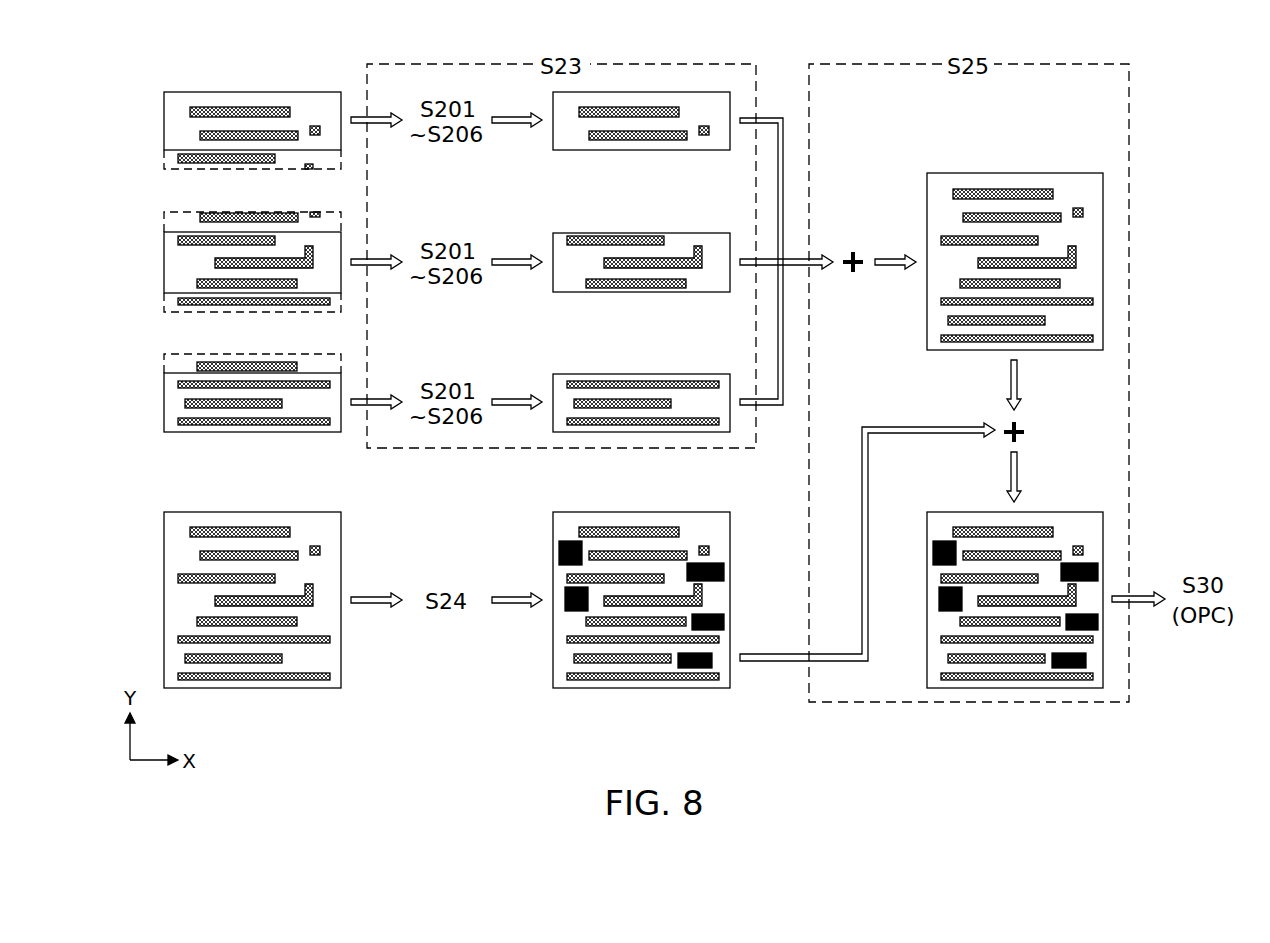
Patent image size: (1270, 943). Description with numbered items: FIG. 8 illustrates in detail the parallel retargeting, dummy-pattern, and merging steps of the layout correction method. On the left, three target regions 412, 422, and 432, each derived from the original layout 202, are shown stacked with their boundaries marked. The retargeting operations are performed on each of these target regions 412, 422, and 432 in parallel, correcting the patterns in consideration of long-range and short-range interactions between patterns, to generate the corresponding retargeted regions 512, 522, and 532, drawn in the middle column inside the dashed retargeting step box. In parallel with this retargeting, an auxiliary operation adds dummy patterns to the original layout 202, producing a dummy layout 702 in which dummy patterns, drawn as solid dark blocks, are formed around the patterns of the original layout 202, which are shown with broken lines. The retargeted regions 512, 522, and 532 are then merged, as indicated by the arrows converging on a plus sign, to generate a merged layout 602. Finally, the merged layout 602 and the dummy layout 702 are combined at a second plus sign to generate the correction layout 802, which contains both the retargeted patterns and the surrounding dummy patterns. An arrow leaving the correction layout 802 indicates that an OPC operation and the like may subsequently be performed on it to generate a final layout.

The original layout 202 is at (302, 512).
The target region 412 is at (164, 92).
The target region 422 is at (164, 212).
The target region 432 is at (164, 354).
The retargeted region 512 is at (592, 150).
The retargeted region 522 is at (692, 233).
The retargeted region 532 is at (691, 374).
The merged layout 602 is at (1064, 173).
The dummy layout 702 is at (692, 512).
The correction layout 802 is at (1064, 512).